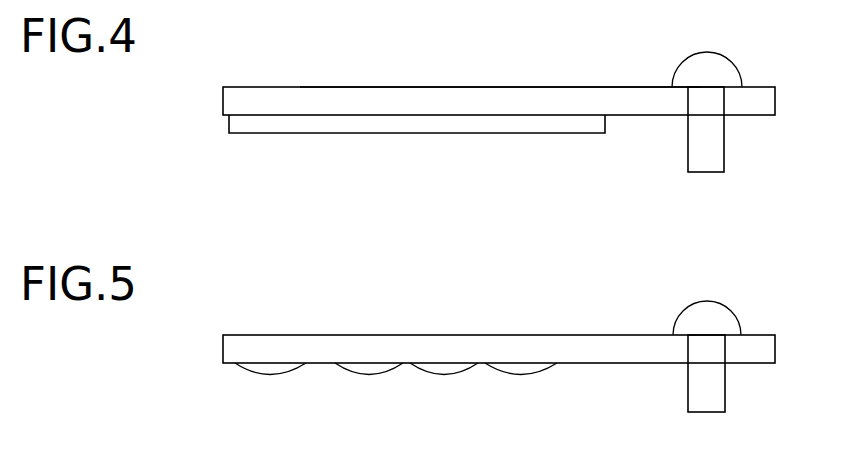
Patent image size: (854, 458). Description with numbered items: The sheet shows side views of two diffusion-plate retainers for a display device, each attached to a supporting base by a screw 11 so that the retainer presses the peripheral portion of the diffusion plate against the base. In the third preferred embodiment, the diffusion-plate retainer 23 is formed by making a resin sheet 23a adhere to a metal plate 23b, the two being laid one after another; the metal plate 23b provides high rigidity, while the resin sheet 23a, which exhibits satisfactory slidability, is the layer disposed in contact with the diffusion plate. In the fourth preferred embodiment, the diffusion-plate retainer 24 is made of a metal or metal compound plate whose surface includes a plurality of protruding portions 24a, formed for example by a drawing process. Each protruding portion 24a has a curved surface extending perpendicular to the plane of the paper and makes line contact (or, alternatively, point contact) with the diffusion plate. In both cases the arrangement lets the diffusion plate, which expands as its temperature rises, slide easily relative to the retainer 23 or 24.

In FIG. 4, the screw 11 is at (728, 72).
In FIG. 5, the screw 11 is at (729, 318).
In FIG. 4, the diffusion-plate retainer 23 is at (253, 107).
In FIG. 4, the resin sheet 23a is at (332, 125).
In FIG. 4, the metal plate 23b is at (414, 105).
In FIG. 5, the diffusion-plate retainer 24 is at (254, 350).
In FIG. 5, the protruding portions 24a is at (373, 377).